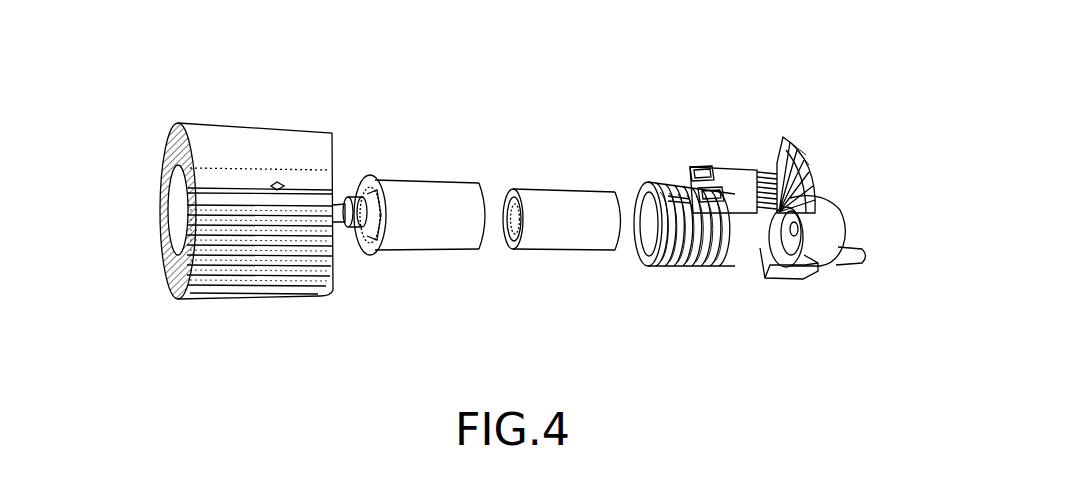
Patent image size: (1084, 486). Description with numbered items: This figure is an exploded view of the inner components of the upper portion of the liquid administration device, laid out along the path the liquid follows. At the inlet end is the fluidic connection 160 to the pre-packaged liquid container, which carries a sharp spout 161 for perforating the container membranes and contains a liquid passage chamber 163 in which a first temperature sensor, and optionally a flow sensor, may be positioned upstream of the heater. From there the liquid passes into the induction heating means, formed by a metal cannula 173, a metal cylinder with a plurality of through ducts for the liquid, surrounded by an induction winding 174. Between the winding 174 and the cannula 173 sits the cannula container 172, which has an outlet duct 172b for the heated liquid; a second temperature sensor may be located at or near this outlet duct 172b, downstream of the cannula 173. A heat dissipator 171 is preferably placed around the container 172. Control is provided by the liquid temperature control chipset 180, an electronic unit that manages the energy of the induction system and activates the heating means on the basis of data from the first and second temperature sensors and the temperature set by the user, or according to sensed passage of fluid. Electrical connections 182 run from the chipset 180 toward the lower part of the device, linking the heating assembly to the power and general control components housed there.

The heat dissipator 171 is at (250, 116).
The cannula container 172 is at (421, 170).
The cannula container outlet duct 172b is at (344, 232).
The metal cannula 173 is at (551, 180).
The induction winding 174 is at (677, 282).
The liquid temperature control chipset 180 is at (730, 165).
The electrical connections 182 is at (776, 146).
The fluidic connection 160 is at (842, 209).
The sharp spout 161 is at (851, 259).
The liquid passage chamber 163 is at (768, 280).